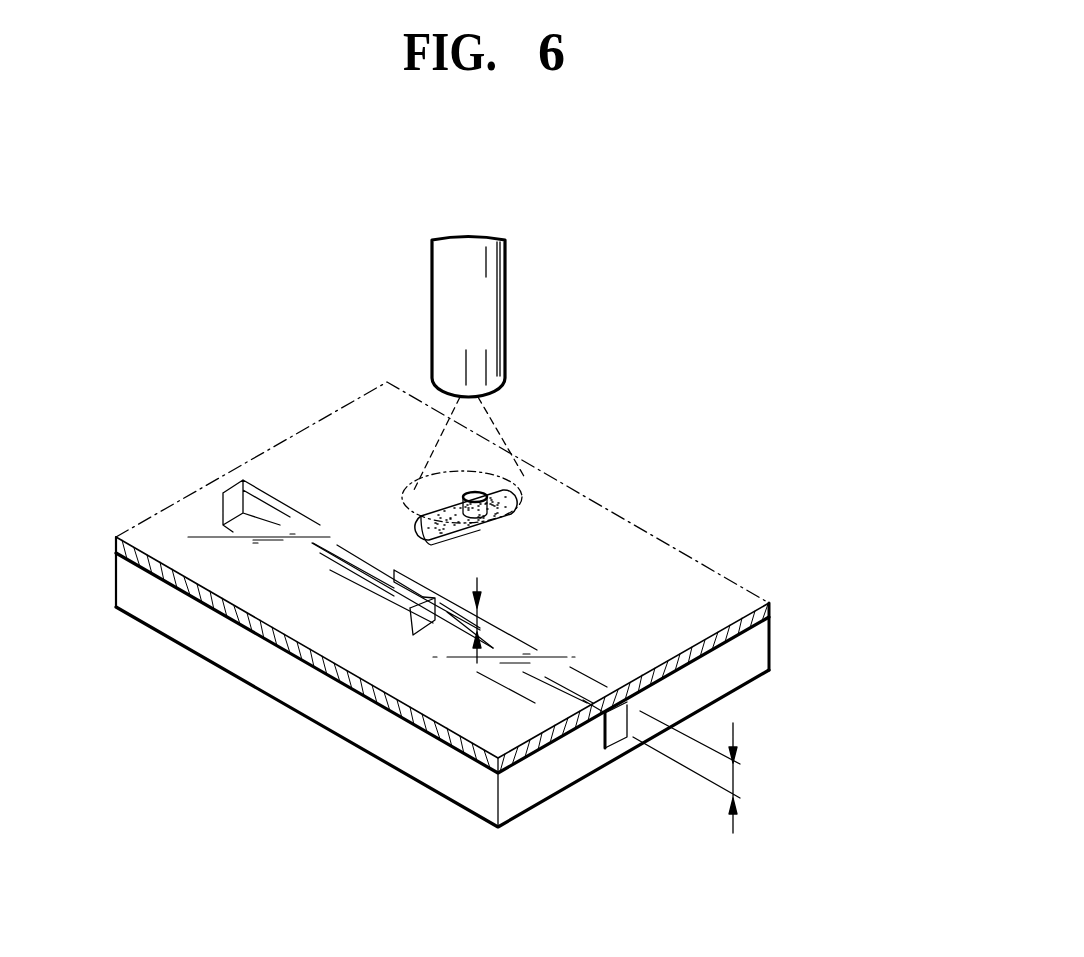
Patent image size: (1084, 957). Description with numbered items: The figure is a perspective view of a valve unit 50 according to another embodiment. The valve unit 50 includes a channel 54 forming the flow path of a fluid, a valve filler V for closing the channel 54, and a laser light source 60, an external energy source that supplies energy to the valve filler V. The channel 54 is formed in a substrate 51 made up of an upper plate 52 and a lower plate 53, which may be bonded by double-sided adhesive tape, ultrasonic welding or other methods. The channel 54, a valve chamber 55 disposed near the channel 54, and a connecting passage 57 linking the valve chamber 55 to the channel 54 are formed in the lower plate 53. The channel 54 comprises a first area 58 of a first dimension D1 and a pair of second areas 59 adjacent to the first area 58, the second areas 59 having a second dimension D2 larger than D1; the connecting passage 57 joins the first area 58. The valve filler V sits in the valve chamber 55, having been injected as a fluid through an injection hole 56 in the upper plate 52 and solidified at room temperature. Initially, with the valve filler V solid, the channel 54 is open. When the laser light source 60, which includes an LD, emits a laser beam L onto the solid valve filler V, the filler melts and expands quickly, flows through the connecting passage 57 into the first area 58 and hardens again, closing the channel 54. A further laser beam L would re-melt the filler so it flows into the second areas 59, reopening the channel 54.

The valve unit 50 is at (132, 424).
The substrate 51 is at (873, 580).
The upper plate 52 is at (772, 610).
The lower plate 53 is at (758, 642).
The channel 54 is at (100, 688).
The valve chamber 55 is at (513, 520).
The injection hole 56 is at (490, 478).
The connecting passage 57 is at (390, 553).
The first area 58 is at (367, 580).
The second areas 59 is at (287, 560).
The laser light source 60 is at (490, 303).
The laser beam L is at (495, 430).
The valve filler V is at (433, 530).
The first dimension D1 is at (505, 620).
The second dimension D2 is at (708, 772).